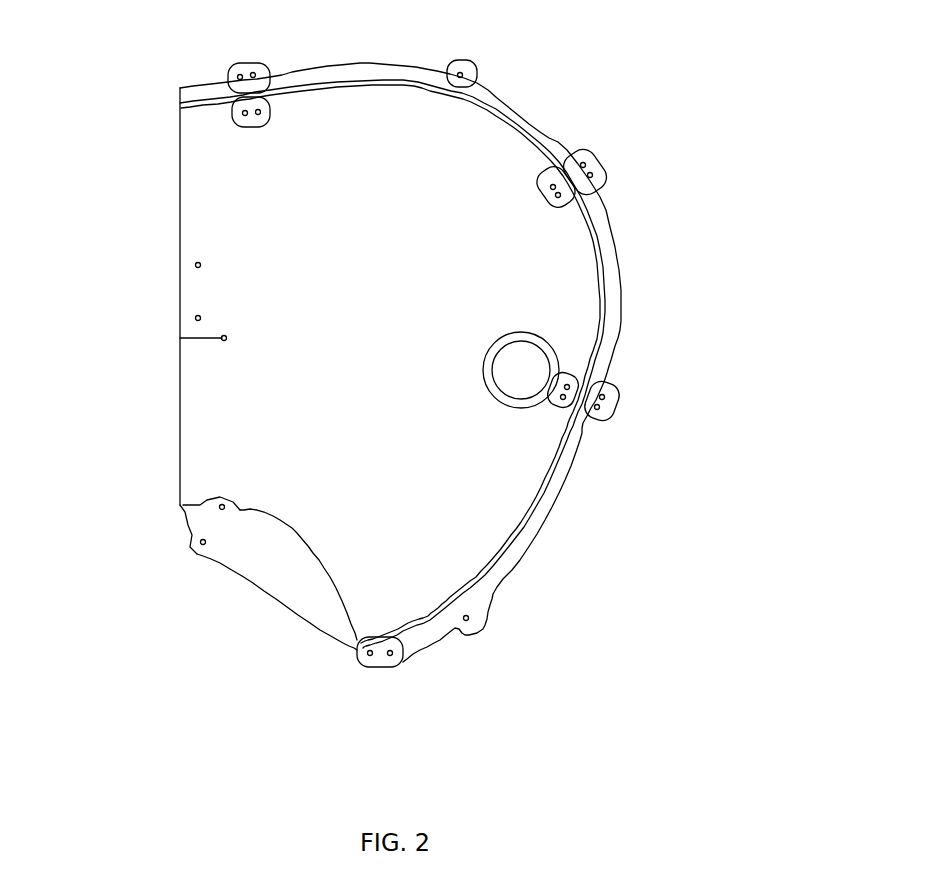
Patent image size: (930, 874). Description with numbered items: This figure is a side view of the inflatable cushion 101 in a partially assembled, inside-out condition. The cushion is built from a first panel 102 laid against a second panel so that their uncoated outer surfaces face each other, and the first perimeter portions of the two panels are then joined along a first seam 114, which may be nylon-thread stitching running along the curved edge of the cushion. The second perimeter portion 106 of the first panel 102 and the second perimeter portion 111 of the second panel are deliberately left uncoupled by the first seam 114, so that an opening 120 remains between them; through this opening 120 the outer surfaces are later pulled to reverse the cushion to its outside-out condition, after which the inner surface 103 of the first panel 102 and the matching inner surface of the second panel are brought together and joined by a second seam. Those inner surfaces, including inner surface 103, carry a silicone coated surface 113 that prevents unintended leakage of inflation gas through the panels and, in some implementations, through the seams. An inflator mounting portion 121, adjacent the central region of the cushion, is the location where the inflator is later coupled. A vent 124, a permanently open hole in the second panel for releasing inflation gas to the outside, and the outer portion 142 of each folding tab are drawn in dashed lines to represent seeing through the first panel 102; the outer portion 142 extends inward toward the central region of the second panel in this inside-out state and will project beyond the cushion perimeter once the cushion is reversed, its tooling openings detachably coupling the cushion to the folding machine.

The inflatable cushion 101 is at (628, 87).
The first panel 102 is at (395, 592).
The inner surface 103 is at (420, 540).
The second perimeter portion 106 is at (287, 523).
The second perimeter portion 111 is at (250, 590).
The coated surface 113 is at (318, 442).
The first seam 114 is at (530, 517).
The opening 120 is at (302, 576).
The inflator mounting portion 121 is at (198, 290).
The vent 124 is at (527, 407).
The outer portion 142 is at (258, 127).